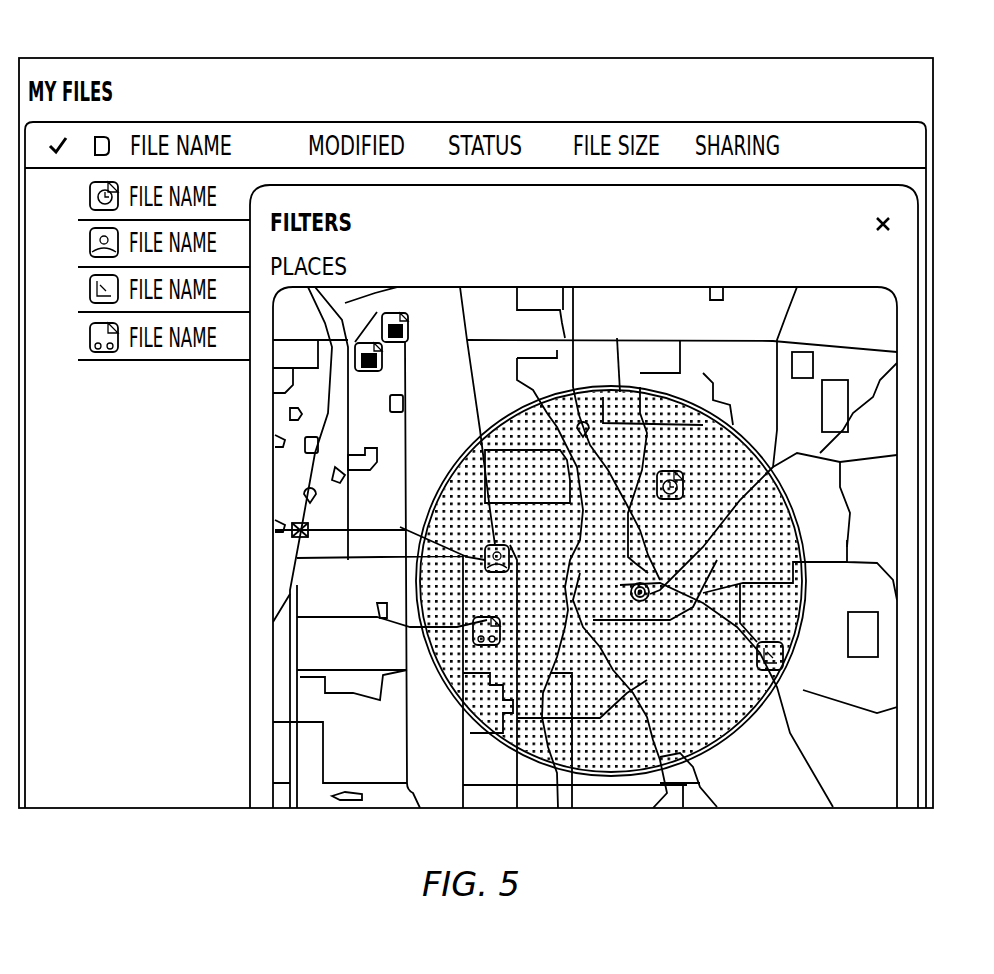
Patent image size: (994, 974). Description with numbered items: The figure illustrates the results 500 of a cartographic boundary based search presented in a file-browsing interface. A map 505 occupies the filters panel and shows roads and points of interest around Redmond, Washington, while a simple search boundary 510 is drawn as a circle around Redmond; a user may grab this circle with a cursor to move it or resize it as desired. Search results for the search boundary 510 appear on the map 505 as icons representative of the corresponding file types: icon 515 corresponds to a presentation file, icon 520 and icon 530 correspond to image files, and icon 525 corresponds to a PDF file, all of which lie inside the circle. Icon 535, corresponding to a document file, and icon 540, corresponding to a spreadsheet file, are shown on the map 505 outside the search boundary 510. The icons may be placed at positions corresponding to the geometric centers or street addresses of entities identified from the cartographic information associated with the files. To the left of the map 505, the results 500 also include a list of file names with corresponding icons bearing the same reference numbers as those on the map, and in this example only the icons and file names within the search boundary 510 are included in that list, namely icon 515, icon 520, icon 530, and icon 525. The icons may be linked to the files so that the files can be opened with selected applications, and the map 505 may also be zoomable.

The results 500 is at (838, 22).
The map 505 is at (587, 287).
The search boundary 510 is at (660, 393).
The icon 515 is at (90, 195).
The icon 520 is at (90, 242).
The icon 525 is at (90, 337).
The icon 530 is at (90, 289).
The icon 535 is at (393, 313).
The icon 540 is at (382, 360).